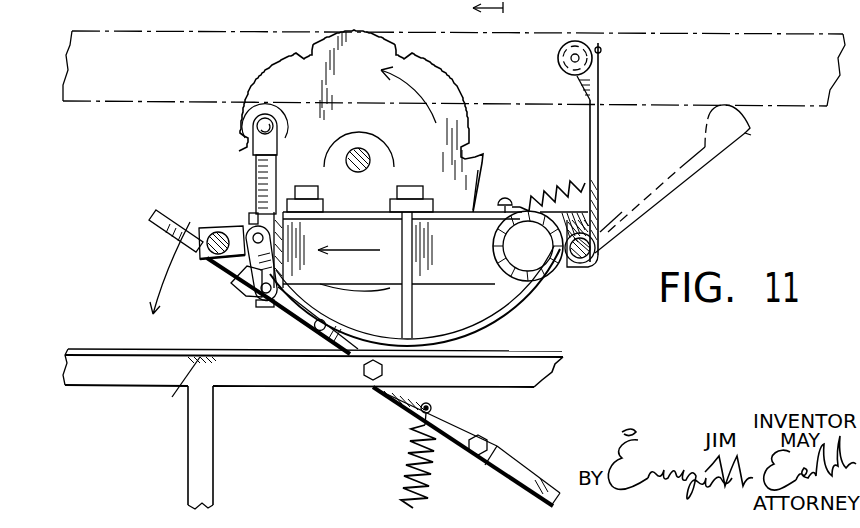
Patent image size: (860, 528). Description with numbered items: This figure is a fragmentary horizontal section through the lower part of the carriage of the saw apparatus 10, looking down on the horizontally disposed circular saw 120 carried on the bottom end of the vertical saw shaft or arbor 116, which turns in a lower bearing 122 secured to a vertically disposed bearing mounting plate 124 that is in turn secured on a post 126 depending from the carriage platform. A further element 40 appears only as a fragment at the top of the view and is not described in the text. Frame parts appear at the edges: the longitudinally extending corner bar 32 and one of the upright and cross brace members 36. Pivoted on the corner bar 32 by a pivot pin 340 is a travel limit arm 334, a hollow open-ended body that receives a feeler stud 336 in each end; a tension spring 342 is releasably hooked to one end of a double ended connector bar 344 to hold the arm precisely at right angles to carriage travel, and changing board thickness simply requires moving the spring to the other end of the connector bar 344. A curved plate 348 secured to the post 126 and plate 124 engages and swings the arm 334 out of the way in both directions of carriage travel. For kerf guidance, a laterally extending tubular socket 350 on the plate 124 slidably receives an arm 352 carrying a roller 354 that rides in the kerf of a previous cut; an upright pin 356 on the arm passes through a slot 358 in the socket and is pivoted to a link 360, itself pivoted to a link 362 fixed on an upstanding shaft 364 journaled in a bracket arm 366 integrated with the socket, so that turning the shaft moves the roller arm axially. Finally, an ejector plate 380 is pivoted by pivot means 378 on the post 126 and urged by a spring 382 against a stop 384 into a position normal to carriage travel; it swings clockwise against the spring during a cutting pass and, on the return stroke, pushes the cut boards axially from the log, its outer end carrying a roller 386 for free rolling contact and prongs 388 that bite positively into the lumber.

The saw apparatus 10 is at (502, 9).
The corner bar 32 is at (103, 350).
The upright and cross brace members 36 is at (196, 420).
The fence 40 is at (279, 4).
The saw shaft or arbor 116 is at (367, 151).
The circular saw 120 is at (370, 40).
The lower bearing 122 is at (393, 156).
The vertically disposed plate 124 is at (480, 217).
The post 126 is at (537, 279).
The travel limit arm 334 is at (455, 422).
The feeler stud 336 is at (516, 477).
The pivot pin 340 is at (368, 379).
The tension spring 342 is at (410, 475).
The double ended connector bar 344 is at (418, 412).
The curved plate 348 is at (500, 318).
The tubular socket 350 is at (277, 209).
The arm 352 is at (258, 172).
The roller 354 is at (245, 120).
The upright pin 356 is at (264, 297).
The slot 358 is at (251, 213).
The link 360 is at (248, 269).
The link 362 is at (242, 236).
The upstanding shaft 364 is at (204, 231).
The bracket arm 366 is at (223, 258).
The pivot means 378 is at (568, 260).
The ejector plate 380 is at (683, 168).
The spring 382 is at (547, 184).
The stop 384 is at (549, 223).
The roller 386 is at (559, 57).
The prongs 388 is at (602, 49).